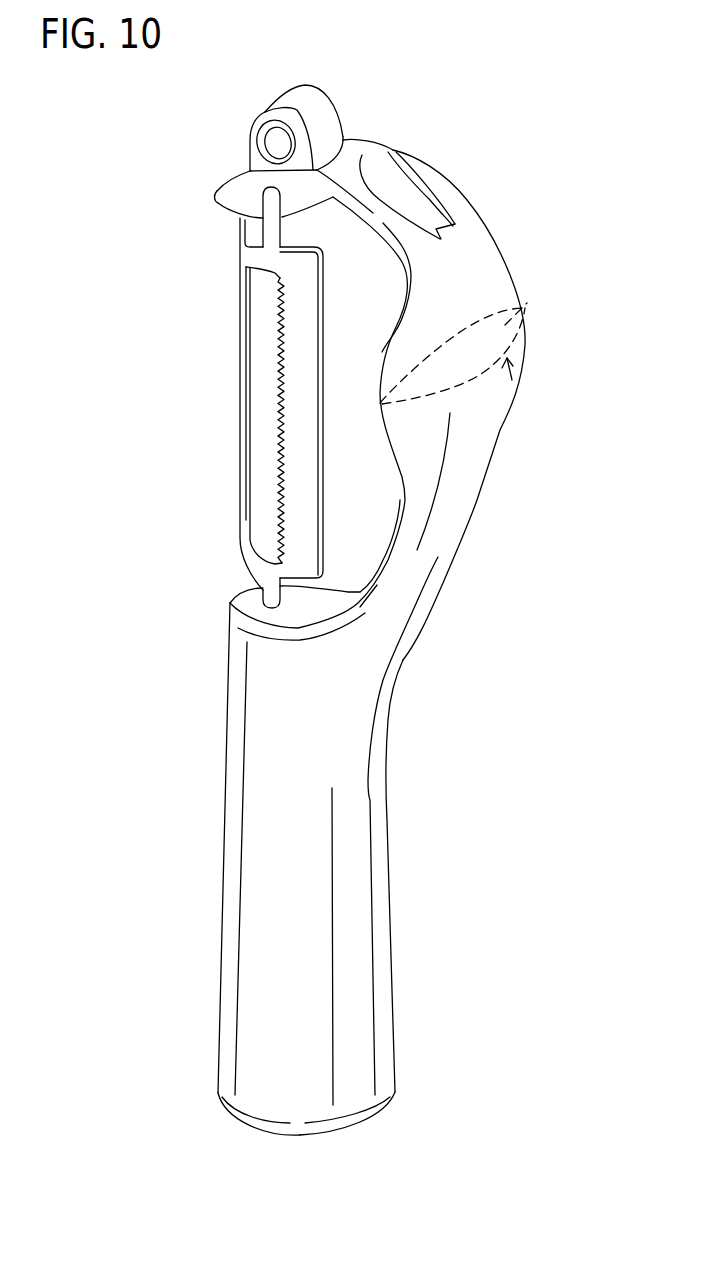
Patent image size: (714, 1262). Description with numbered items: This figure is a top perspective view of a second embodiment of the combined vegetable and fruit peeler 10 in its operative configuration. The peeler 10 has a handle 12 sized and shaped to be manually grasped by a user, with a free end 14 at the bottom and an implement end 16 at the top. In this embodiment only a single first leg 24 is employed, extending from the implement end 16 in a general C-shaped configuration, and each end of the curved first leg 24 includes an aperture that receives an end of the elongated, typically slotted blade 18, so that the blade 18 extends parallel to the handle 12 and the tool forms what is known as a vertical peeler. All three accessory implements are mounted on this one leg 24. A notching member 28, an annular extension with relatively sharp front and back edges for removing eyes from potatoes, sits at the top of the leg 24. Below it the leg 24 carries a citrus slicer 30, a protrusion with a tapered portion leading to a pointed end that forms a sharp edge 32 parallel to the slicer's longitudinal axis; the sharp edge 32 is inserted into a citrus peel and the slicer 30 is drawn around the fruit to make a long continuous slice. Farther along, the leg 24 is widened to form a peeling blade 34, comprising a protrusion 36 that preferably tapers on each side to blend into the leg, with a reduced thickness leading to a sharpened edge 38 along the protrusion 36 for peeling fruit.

The combined vegetable and fruit peeler 10 is at (489, 89).
The handle 12 is at (258, 798).
The free end 14 is at (358, 1132).
The implement end 16 is at (460, 581).
The blade 18 is at (240, 384).
The first leg 24 is at (470, 472).
The notching member 28 is at (327, 92).
The citrus slicer 30 is at (423, 188).
The sharp edge 32 is at (453, 230).
The peeling blade 34 is at (497, 375).
The protrusion 36 is at (497, 333).
The sharpened edge 38 is at (517, 303).